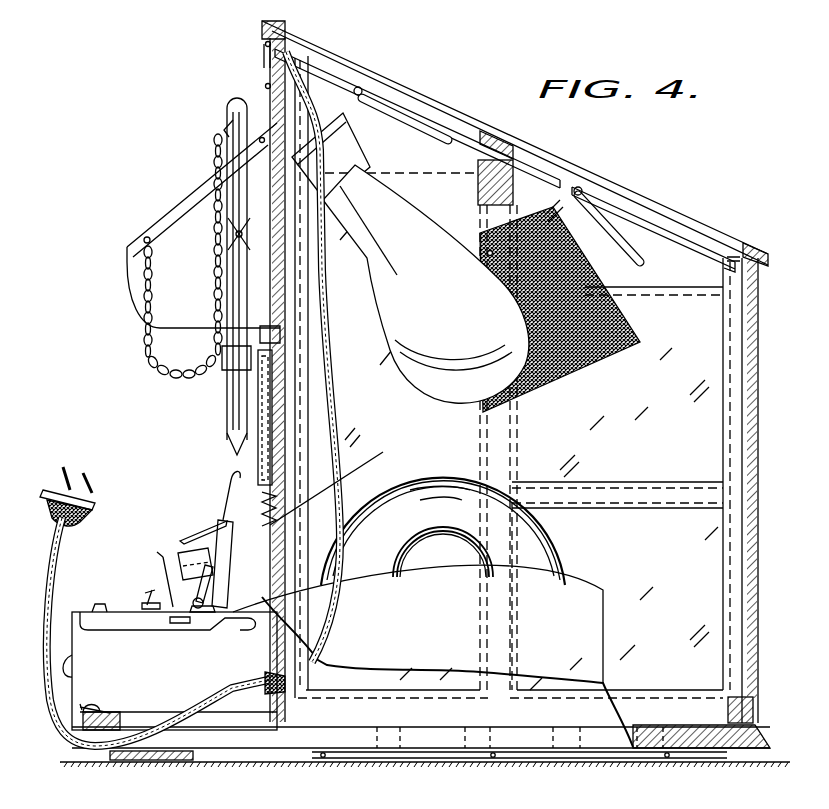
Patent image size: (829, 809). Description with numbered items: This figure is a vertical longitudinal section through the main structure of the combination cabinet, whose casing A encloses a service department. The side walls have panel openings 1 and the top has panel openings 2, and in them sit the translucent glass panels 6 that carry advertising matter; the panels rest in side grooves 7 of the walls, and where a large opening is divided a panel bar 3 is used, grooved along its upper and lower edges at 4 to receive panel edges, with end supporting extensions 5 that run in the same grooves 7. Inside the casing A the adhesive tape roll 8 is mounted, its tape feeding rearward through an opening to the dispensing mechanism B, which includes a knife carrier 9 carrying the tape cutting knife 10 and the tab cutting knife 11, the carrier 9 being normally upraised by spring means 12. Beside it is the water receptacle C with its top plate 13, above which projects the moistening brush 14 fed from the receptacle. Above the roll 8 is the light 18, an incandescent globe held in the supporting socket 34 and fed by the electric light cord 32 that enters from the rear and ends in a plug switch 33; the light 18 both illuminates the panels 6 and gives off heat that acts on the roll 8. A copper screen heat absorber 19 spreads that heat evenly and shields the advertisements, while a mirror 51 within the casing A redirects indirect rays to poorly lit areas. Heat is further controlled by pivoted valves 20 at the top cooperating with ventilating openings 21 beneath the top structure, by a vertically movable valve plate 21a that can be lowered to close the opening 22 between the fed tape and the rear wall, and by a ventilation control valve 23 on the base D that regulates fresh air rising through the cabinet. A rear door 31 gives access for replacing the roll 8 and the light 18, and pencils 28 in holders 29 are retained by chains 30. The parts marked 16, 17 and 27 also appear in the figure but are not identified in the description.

The panel openings 1 is at (750, 355).
The panel openings 2 is at (400, 90).
The panel bars 3 is at (717, 490).
The grooves 4 is at (648, 483).
The end supporting extensions 5 is at (740, 490).
The glass panels 6 is at (508, 167).
The side grooves 7 is at (727, 433).
The adhesive tape roll 8 is at (485, 470).
The knife carrier 9 is at (230, 483).
The tape cutting knife 10 is at (192, 537).
The tab cutting knife 11 is at (167, 568).
The spring means 12 is at (200, 595).
The top plate 13 is at (133, 622).
The moistening brush 14 is at (100, 608).
The plug 16 is at (100, 717).
The arm 17 is at (80, 707).
The light 18 is at (410, 365).
The copper screen heat absorber 19 is at (610, 347).
The pivoted valves 20 is at (450, 136).
The ventilating openings 21 is at (633, 210).
The valve plate 21a is at (346, 438).
The opening 22 is at (276, 574).
The ventilation control valve 23 is at (473, 757).
The brace 27 is at (163, 280).
The pencils 28 is at (233, 147).
The holders 29 is at (227, 233).
The chains 30 is at (155, 370).
The rear door 31 is at (322, 270).
The electric light cord 32 is at (185, 727).
The plug switch 33 is at (53, 487).
The supporting socket 34 is at (353, 157).
The mirror 51 is at (305, 60).
The casing A is at (753, 292).
The dispensing mechanism B is at (176, 549).
The water receptacle C is at (175, 672).
The base D is at (287, 747).